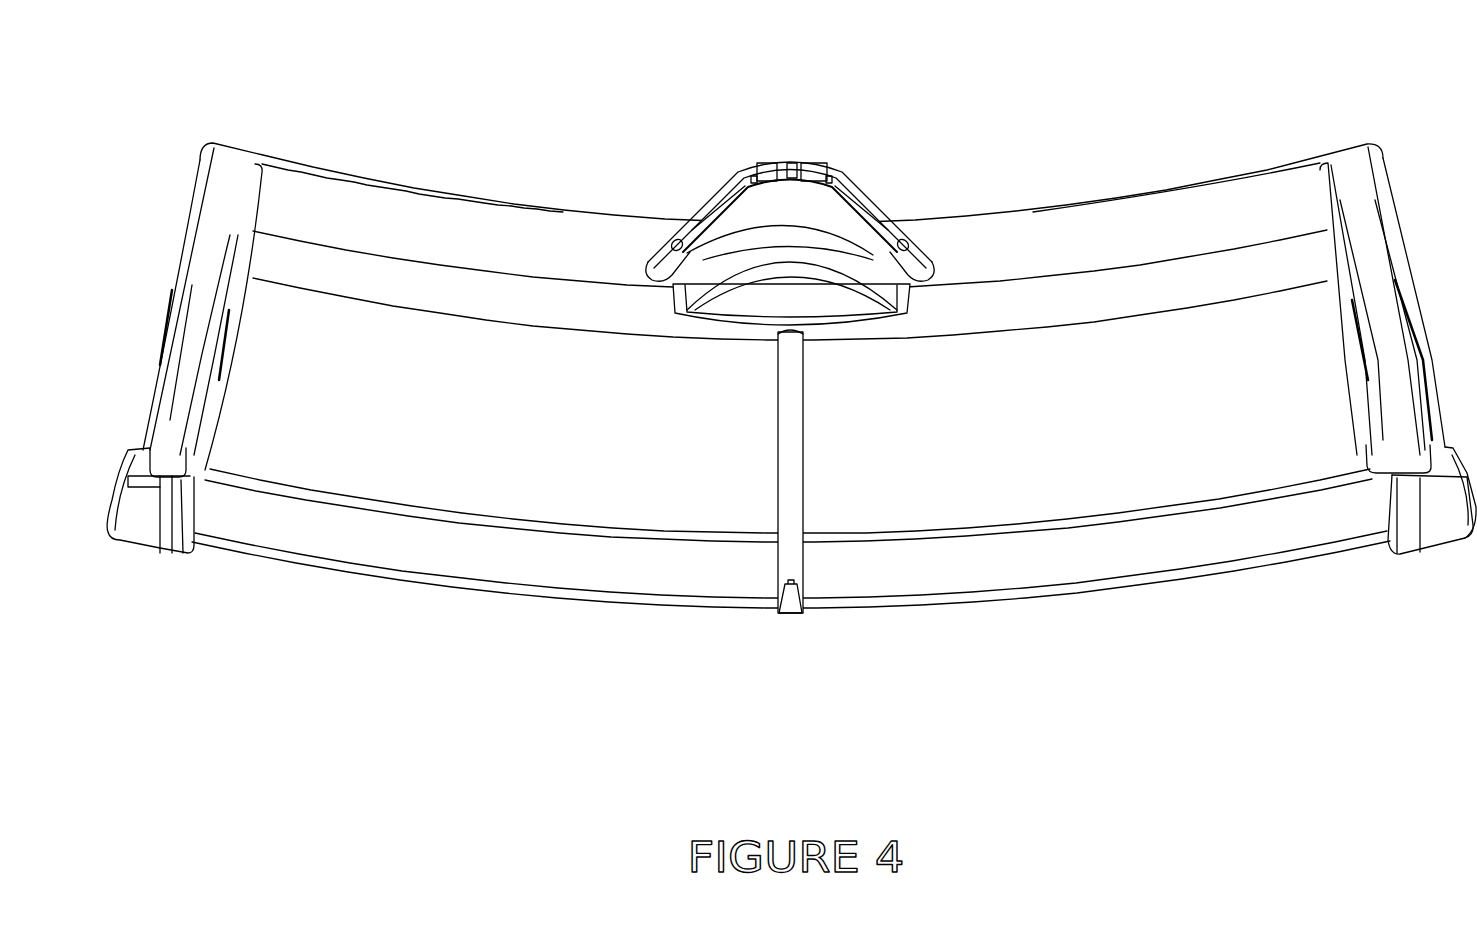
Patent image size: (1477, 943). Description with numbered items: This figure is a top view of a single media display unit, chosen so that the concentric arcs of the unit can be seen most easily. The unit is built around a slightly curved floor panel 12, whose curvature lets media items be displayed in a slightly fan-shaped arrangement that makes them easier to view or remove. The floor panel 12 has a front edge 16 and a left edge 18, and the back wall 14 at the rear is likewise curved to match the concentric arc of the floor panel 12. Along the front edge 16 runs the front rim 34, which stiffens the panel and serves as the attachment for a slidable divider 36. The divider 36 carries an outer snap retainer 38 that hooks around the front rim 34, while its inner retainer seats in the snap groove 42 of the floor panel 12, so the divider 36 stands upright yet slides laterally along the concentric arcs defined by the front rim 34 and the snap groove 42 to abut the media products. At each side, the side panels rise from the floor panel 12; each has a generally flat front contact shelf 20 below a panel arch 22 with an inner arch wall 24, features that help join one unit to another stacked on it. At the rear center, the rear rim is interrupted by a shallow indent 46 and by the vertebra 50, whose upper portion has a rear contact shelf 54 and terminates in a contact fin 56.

The floor panel 12 is at (791, 410).
The left side panel 14 is at (1054, 314).
The front edge 16 is at (226, 184).
The left edge 18 is at (1353, 168).
The front contact shelf 20 is at (157, 481).
The panel arch 22 is at (785, 258).
The inner arch wall 24 is at (229, 338).
The front rim 34 is at (487, 589).
The slidable divider 36 is at (760, 518).
The outer snap retainer 38 is at (798, 608).
The snap groove 42 is at (397, 511).
The shallow indent 46 is at (817, 303).
The vertebra 50 is at (774, 251).
The rear contact shelf 54 is at (735, 190).
The contact fin 56 is at (835, 215).